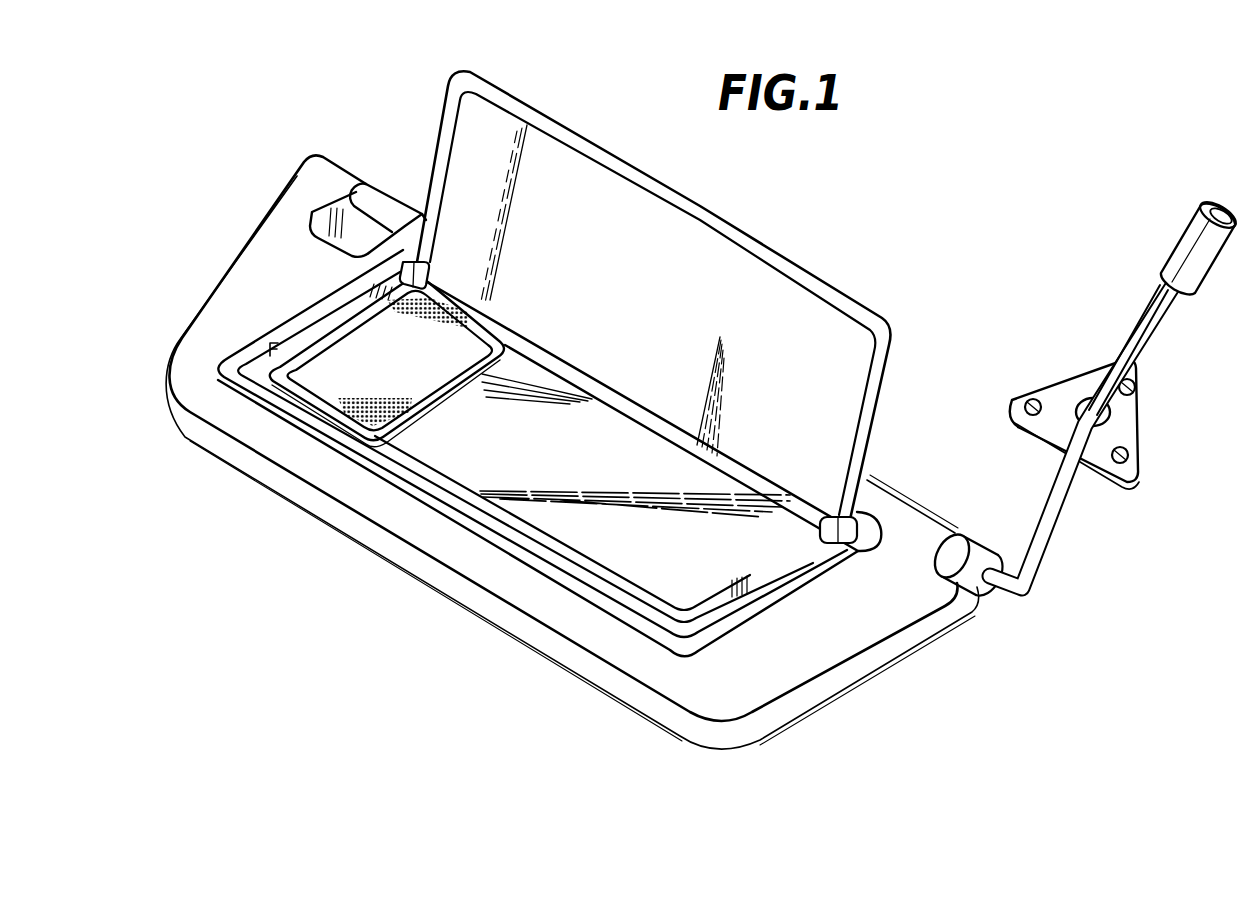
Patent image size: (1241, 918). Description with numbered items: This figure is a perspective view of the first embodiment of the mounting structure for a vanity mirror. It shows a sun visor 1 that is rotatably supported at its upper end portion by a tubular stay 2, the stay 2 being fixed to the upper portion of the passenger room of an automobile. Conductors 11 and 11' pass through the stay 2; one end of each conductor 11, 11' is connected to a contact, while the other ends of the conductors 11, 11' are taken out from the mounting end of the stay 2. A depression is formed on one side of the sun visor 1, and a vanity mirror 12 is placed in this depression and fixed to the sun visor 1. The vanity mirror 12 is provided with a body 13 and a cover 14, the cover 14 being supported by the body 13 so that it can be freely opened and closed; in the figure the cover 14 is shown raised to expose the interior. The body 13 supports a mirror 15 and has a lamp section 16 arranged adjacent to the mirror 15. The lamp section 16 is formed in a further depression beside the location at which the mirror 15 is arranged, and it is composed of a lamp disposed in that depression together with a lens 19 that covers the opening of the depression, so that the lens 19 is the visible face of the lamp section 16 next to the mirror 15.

The sun visor 1 is at (900, 667).
The tubular stay 2 is at (1060, 520).
The conductor 11 is at (1113, 343).
The conductor 11' is at (1197, 283).
The vanity mirror 12 is at (578, 598).
The body 13 is at (528, 568).
The cover 14 is at (712, 256).
The mirror 15 is at (470, 482).
The lamp section 16 is at (355, 352).
The lens 19 is at (471, 343).